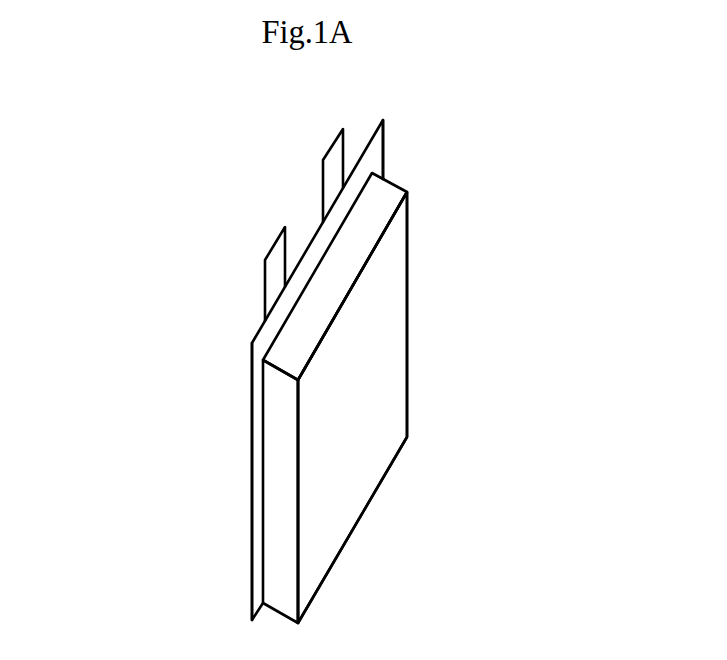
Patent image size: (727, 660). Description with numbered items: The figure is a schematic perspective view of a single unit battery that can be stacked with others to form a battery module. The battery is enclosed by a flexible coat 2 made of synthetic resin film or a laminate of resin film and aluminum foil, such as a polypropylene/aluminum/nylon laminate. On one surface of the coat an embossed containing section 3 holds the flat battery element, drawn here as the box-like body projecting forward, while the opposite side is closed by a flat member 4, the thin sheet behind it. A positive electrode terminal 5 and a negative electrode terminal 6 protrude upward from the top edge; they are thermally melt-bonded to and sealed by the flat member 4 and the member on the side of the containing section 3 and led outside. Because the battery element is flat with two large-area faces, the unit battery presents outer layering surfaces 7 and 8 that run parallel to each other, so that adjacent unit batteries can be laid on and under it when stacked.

The flexible coat 2 is at (377, 163).
The containing section 3 is at (432, 323).
The flat member 4 is at (246, 428).
The positive electrode terminal 5 is at (273, 268).
The negative electrode terminal 6 is at (341, 167).
The outer layering surface 7 is at (240, 350).
The outer layering surface 8 is at (357, 422).